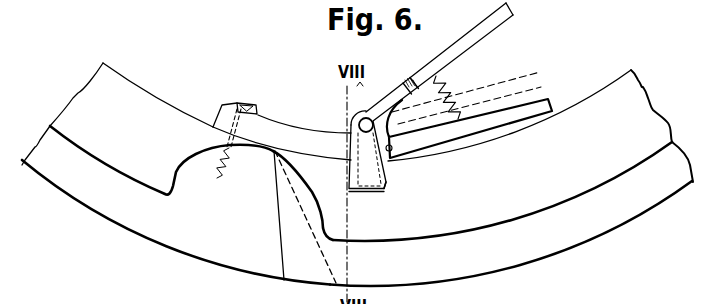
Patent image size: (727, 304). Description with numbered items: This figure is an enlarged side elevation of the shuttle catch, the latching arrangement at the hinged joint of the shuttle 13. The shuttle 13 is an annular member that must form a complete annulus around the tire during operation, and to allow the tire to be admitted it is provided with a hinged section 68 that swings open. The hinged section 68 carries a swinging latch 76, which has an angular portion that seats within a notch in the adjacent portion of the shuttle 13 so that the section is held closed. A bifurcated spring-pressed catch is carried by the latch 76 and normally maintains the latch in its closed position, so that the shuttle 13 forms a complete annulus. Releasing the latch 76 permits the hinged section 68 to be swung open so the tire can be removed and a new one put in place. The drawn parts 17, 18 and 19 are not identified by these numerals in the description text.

The shuttle 13 is at (511, 178).
The hinged section 68 is at (176, 174).
The swinging latch 76 is at (296, 133).
The lever handle 17 is at (355, 192).
The jaw bar 18 is at (375, 191).
The bracket plate edge 19 is at (399, 179).